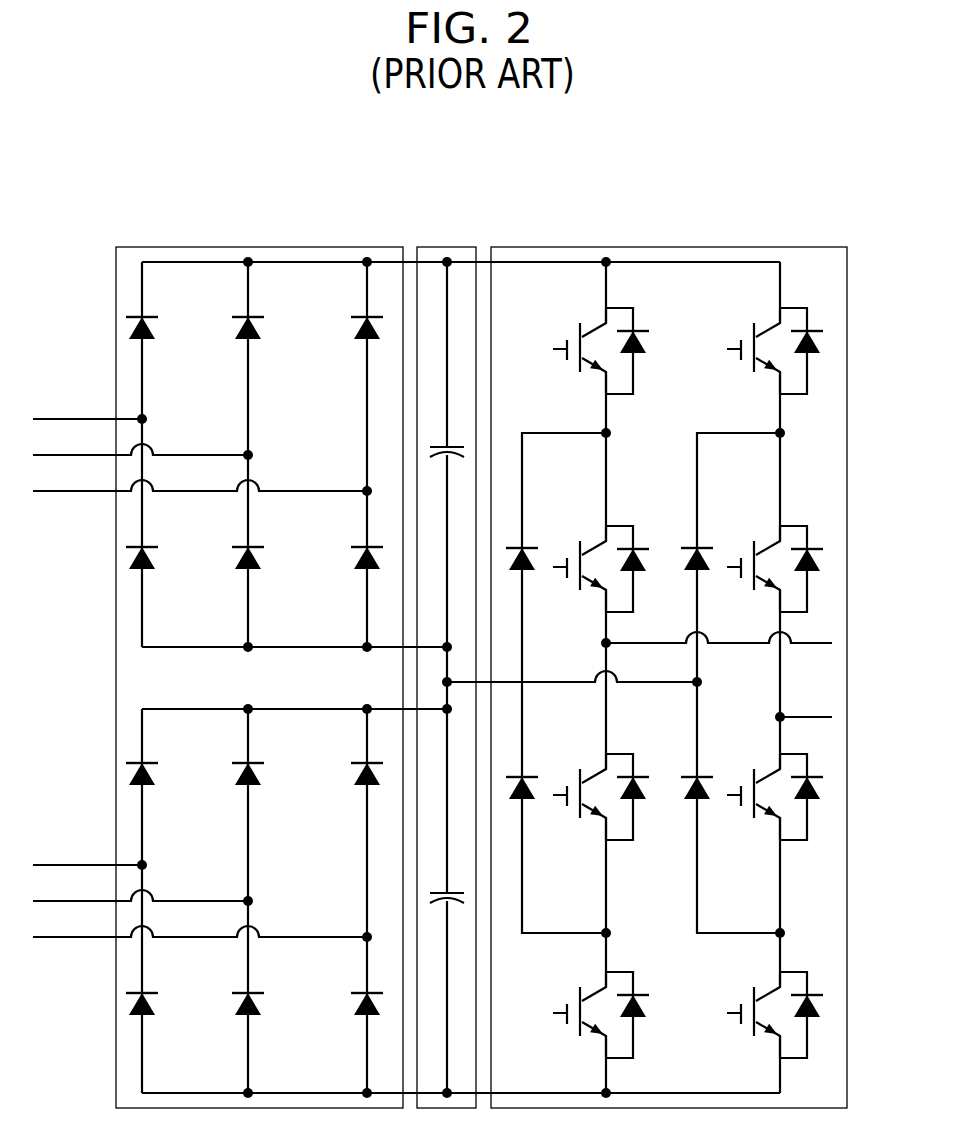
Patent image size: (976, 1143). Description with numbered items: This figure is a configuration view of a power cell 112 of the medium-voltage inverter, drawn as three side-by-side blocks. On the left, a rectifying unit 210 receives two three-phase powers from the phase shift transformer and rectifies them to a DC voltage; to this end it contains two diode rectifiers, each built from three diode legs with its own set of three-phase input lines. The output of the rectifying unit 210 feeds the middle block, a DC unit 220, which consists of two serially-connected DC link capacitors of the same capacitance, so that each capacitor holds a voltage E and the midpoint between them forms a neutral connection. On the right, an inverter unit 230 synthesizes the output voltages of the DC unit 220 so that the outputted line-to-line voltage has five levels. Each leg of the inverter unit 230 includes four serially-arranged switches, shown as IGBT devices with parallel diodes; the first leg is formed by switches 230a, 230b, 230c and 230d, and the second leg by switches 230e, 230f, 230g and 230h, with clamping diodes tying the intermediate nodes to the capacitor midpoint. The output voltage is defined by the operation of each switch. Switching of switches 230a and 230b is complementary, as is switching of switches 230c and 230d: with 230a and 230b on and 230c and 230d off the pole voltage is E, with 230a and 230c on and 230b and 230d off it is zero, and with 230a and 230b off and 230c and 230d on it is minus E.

The power conversion device (inverter) 112 is at (733, 175).
The rectifying unit 210 is at (256, 247).
The DC unit 220 is at (445, 247).
The inverter unit 230 is at (665, 247).
The switch 230a is at (598, 340).
The switch 230b is at (598, 558).
The switch 230c is at (598, 786).
The switch 230d is at (598, 1004).
The switching element 230e is at (774, 340).
The switching element 230f is at (774, 558).
The switching element 230g is at (774, 786).
The switching element 230h is at (774, 1004).